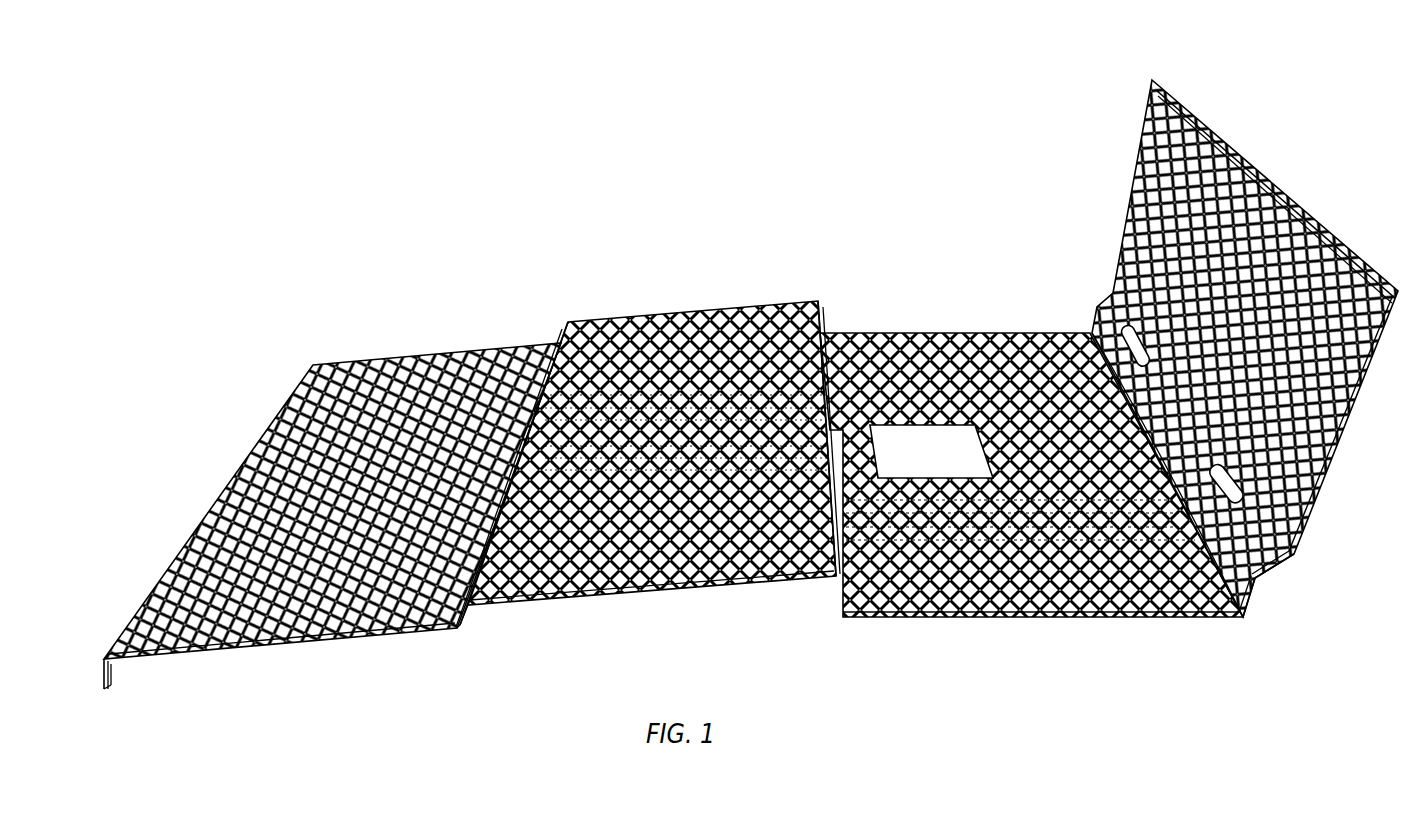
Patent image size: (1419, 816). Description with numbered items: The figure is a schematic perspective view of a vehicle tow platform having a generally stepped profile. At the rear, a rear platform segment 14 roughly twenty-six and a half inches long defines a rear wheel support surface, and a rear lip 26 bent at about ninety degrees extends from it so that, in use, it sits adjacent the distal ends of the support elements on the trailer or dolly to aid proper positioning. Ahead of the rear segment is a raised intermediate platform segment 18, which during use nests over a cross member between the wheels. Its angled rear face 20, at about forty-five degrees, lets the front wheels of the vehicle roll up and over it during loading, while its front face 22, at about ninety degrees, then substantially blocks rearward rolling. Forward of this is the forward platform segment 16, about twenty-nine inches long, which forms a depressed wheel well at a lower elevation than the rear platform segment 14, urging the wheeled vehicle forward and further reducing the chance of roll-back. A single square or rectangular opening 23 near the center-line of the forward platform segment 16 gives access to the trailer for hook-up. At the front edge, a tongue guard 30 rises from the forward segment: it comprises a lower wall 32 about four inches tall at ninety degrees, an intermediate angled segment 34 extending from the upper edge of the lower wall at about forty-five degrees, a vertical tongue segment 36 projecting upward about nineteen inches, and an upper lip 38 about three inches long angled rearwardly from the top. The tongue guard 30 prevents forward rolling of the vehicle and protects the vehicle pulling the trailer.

The rear platform segment 14 is at (485, 345).
The forward platform segment 16 is at (950, 619).
The raised intermediate platform segment 18 is at (670, 321).
The angled rear face 20 is at (462, 622).
The front face 22 is at (822, 322).
The opening 23 is at (936, 459).
The rear lip 26 is at (113, 681).
The tongue guard 30 is at (1130, 203).
The lower wall 32 is at (1250, 605).
The intermediate angled segment 34 is at (1280, 567).
The vertical tongue segment 36 is at (1322, 495).
The upper lip 38 is at (1178, 100).